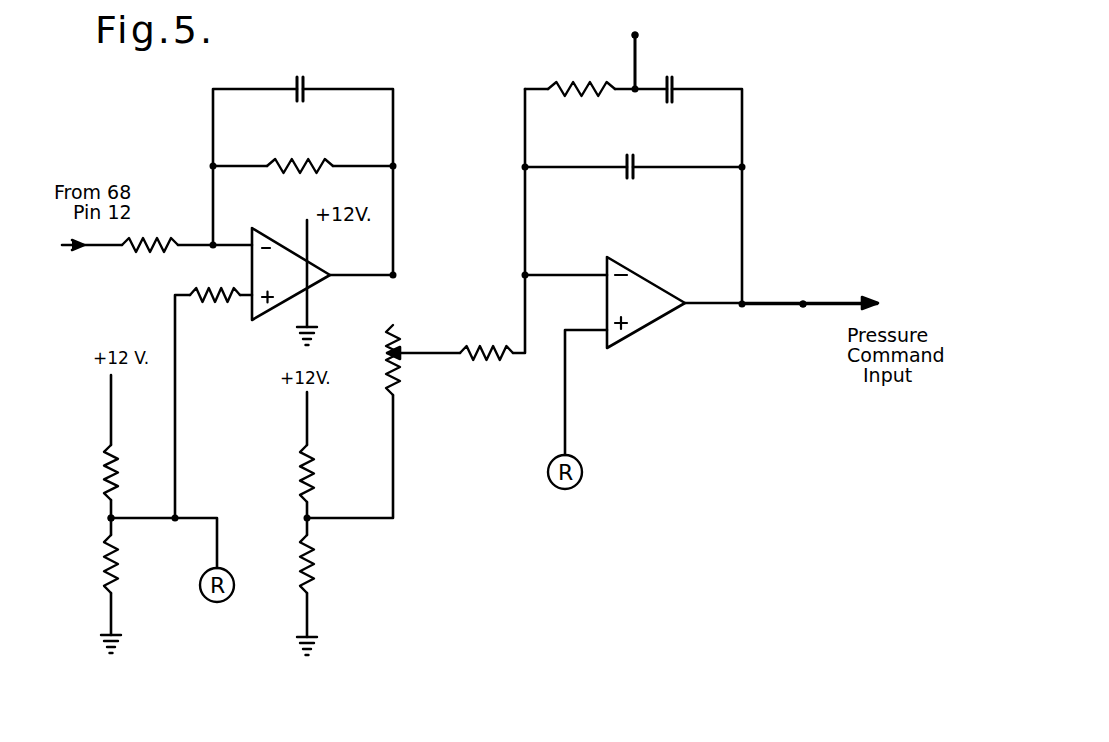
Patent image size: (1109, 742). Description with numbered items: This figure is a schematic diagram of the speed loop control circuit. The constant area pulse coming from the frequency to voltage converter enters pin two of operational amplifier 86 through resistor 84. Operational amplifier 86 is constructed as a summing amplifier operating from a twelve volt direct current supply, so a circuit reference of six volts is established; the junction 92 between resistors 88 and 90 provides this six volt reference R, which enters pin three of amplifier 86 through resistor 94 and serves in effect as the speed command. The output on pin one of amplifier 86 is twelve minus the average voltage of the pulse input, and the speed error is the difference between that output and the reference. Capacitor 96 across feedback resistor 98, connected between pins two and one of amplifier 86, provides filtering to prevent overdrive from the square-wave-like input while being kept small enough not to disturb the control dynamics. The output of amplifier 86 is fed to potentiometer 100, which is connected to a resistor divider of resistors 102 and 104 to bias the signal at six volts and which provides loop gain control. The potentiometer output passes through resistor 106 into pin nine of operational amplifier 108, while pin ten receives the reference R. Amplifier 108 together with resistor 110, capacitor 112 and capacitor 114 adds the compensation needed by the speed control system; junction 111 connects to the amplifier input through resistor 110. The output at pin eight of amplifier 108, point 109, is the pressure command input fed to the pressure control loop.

The resistor 84 is at (158, 250).
The operational amplifier 86 is at (294, 282).
The resistor 88 is at (118, 480).
The resistor 90 is at (118, 553).
The junction 92 is at (108, 520).
The resistor 94 is at (210, 292).
The capacitor 96 is at (302, 101).
The feedback resistor 98 is at (297, 160).
The potentiometer 100 is at (398, 338).
The resistor 102 is at (313, 573).
The resistor 104 is at (313, 483).
The resistor 106 is at (483, 360).
The operational amplifier 108 is at (648, 310).
The point 109 is at (803, 300).
The resistor 110 is at (588, 95).
The junction 111 is at (638, 34).
The capacitor 112 is at (667, 103).
The capacitor 114 is at (628, 178).